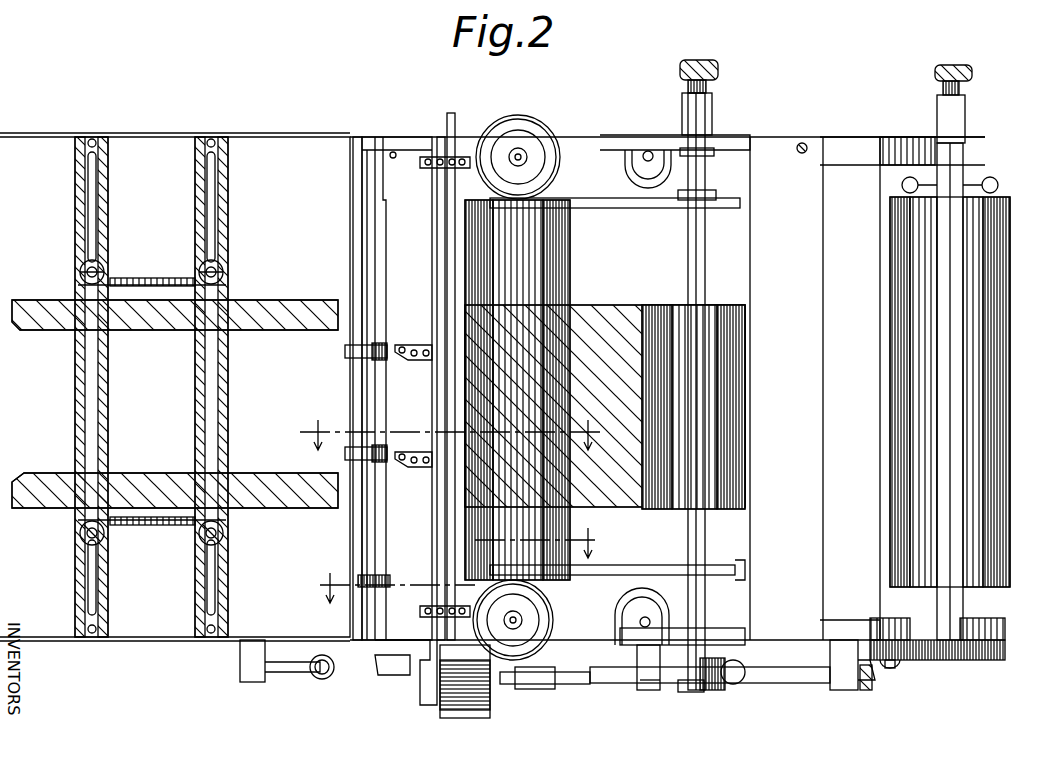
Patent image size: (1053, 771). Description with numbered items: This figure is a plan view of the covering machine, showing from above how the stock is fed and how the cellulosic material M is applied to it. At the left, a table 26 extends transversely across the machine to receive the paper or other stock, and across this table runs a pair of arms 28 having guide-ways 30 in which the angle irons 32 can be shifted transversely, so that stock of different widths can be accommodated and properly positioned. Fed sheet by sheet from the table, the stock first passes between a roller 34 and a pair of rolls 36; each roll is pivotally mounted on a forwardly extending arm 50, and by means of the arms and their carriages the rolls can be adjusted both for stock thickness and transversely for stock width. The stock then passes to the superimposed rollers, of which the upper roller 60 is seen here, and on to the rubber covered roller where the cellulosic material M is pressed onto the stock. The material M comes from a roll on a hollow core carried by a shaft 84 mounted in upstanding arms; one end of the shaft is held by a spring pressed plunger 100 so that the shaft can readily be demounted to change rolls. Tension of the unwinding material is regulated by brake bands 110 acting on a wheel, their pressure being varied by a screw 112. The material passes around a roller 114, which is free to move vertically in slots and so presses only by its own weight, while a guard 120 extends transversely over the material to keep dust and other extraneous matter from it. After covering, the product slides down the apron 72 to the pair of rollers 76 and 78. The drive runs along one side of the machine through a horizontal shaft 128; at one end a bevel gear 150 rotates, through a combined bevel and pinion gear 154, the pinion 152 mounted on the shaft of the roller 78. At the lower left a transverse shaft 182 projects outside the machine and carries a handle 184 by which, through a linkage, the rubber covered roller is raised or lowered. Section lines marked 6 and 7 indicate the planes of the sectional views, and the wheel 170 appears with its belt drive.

The table 26 is at (175, 387).
The arms 28 is at (195, 372).
The guide-ways 30 is at (211, 233).
The angle irons 32 is at (284, 296).
The roller 34 is at (362, 237).
The rolls 36 is at (345, 353).
The forwardly extending arm 50 is at (390, 343).
The roller 60 is at (447, 393).
The cellulosic material M is at (745, 332).
The pulleys 170 is at (540, 120).
The guard 120 is at (634, 208).
The roller 114 is at (705, 248).
The spring pressed plunger 100 is at (718, 72).
The shaft 84 is at (700, 185).
The apron 72 is at (667, 388).
The roller 76 is at (950, 420).
The roller 78 is at (1003, 370).
The pinion 152 is at (990, 662).
The combined bevel and pinion gear 154 is at (925, 672).
The bevel gear 150 is at (870, 690).
The shaft 128 is at (775, 684).
The screw 112 is at (732, 692).
The brake bands 110 is at (670, 683).
The shaft 182 is at (250, 682).
The handle 184 is at (300, 680).
The section line 7- 7 is at (450, 435).
The section line 6- 6 is at (457, 565).